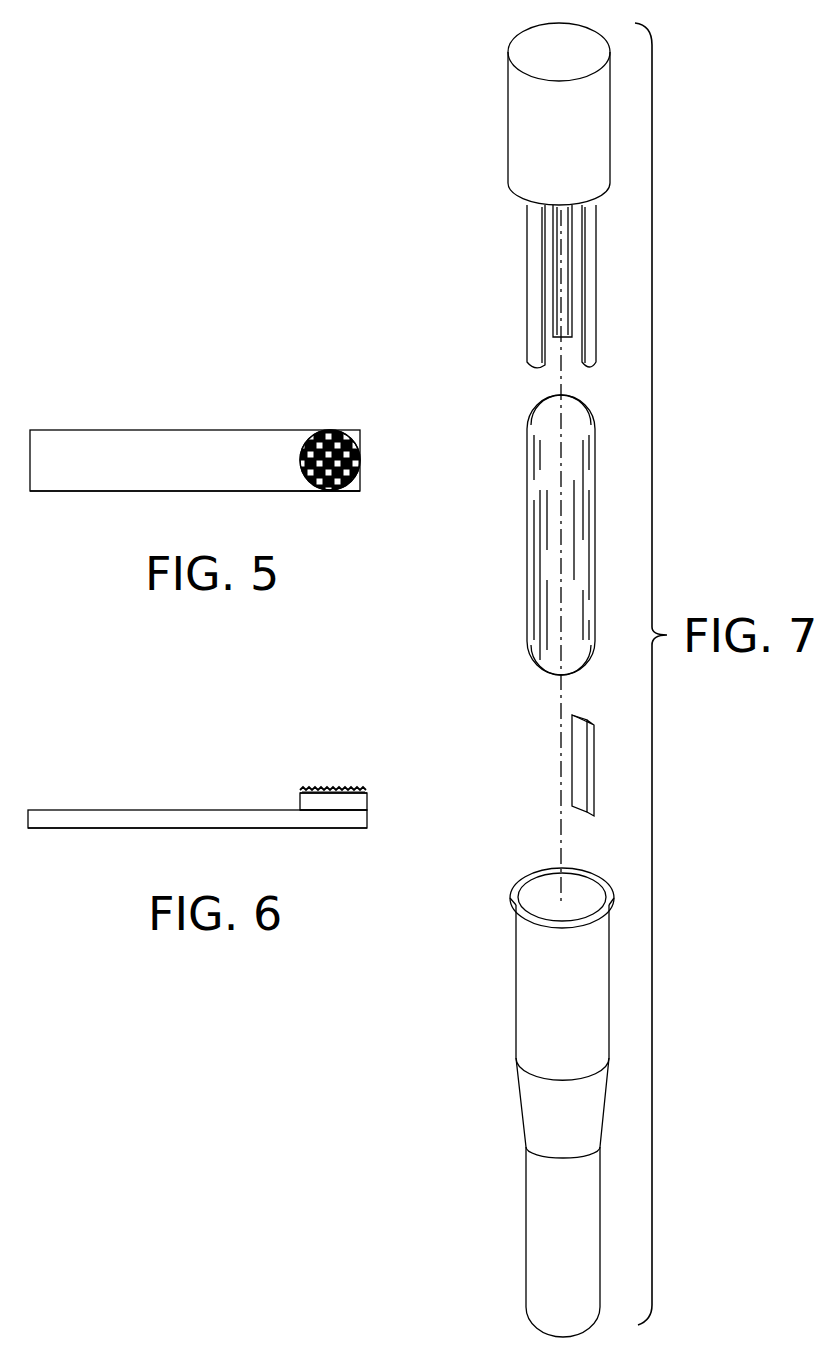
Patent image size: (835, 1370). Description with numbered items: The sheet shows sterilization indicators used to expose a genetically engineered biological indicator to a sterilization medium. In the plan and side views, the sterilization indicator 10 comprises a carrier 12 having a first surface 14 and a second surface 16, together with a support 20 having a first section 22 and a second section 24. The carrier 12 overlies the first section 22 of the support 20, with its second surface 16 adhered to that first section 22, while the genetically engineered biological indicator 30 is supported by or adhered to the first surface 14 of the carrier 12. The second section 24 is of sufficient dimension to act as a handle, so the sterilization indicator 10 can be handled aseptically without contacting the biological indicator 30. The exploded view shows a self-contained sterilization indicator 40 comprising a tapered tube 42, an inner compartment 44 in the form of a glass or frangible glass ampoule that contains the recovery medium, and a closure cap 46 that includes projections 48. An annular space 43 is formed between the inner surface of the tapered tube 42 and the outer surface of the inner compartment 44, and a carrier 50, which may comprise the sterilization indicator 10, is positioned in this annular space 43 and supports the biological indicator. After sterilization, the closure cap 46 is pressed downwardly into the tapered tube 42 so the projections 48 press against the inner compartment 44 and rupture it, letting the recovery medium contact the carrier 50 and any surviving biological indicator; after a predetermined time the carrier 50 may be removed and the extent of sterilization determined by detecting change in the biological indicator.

In FIG. 5, the sterilization indicator 10 is at (122, 408).
In FIG. 6, the sterilization indicator 10 is at (102, 782).
In FIG. 5, the carrier 12 is at (352, 438).
In FIG. 6, the carrier 12 is at (368, 798).
In FIG. 6, the first surface 14 is at (328, 790).
In FIG. 6, the second surface 16 is at (315, 812).
In FIG. 5, the support 20 is at (188, 430).
In FIG. 6, the support 20 is at (157, 810).
In FIG. 5, the first section 22 is at (330, 492).
In FIG. 5, the second section 24 is at (75, 492).
In FIG. 6, the second section 24 is at (55, 828).
In FIG. 5, the genetically engineered biological indicator 30 is at (358, 470).
In FIG. 6, the genetically engineered biological indicator 30 is at (350, 790).
In FIG. 7, the sterilization indicator 40 is at (505, 272).
In FIG. 7, the tapered tube 42 is at (535, 998).
In FIG. 7, the annular space 43 is at (590, 900).
In FIG. 7, the inner compartment 44 is at (540, 520).
In FIG. 7, the closure cap 46 is at (508, 122).
In FIG. 7, the projections 48 is at (593, 282).
In FIG. 7, the carrier 50 is at (575, 760).